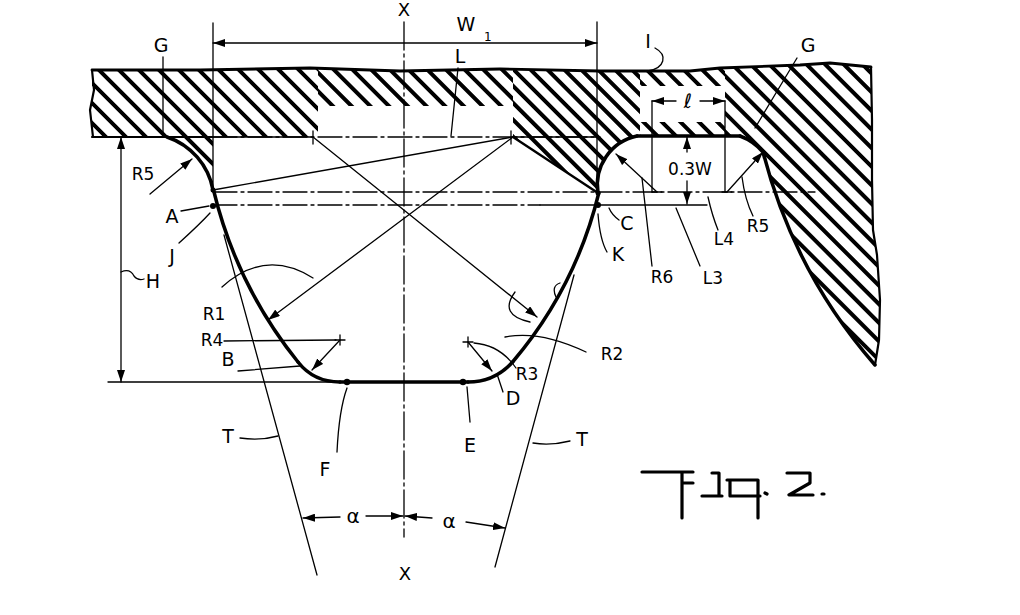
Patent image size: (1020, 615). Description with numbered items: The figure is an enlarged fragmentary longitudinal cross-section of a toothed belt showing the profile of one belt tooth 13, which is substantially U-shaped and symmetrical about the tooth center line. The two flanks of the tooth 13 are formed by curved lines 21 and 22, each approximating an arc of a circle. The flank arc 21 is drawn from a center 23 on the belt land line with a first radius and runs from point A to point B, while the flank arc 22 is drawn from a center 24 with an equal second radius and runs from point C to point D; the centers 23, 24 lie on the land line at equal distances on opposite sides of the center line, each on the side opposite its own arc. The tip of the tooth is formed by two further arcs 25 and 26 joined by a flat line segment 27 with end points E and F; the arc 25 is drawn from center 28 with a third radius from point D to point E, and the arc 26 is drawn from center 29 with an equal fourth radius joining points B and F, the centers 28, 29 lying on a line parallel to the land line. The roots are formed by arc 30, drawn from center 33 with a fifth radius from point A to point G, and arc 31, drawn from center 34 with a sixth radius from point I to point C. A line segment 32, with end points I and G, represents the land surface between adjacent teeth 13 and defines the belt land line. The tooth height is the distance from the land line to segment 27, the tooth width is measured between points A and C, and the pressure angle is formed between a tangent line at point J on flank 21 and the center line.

The belt tooth 13 is at (817, 252).
The flank arc 21 is at (226, 247).
The flank arc 22 is at (563, 303).
The center of arc 21 23 is at (512, 136).
The center of arc 22 24 is at (312, 136).
The tip arc 25 is at (482, 385).
The tip arc 26 is at (322, 386).
The line segment 27 is at (395, 385).
The center of arc 25 28 is at (516, 353).
The center of arc 26 29 is at (351, 388).
The root arc 30 is at (187, 143).
The root arc 31 is at (618, 136).
The line segment 32 is at (123, 136).
The center of arc 30 33 is at (211, 191).
The center of arc 31 34 is at (660, 195).